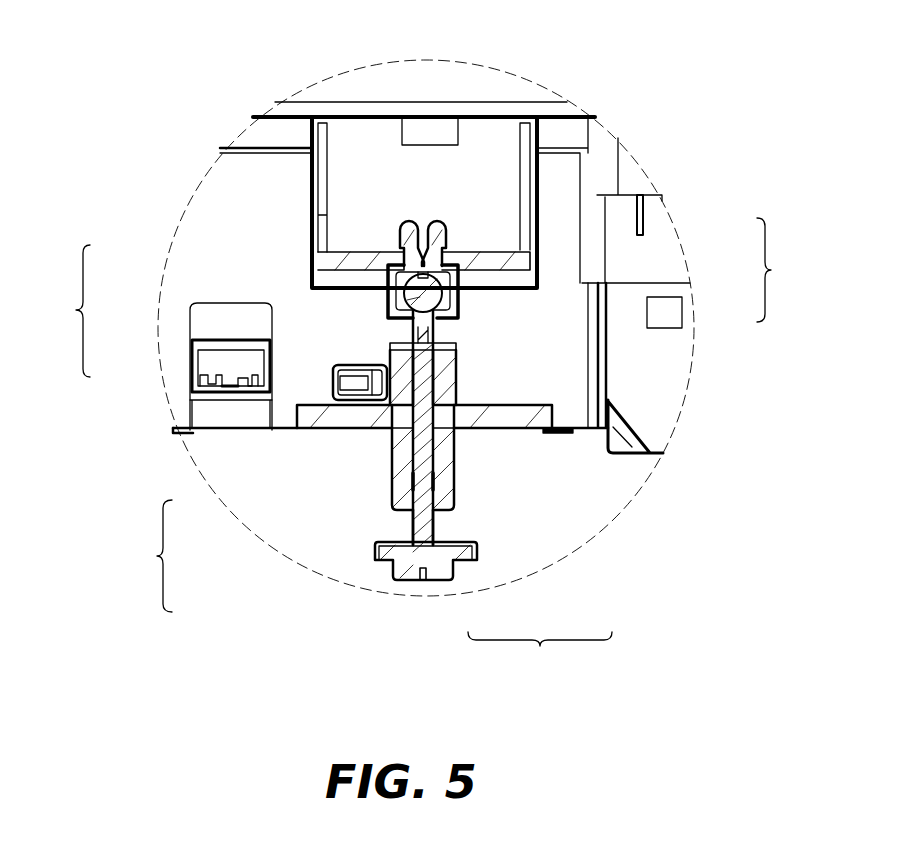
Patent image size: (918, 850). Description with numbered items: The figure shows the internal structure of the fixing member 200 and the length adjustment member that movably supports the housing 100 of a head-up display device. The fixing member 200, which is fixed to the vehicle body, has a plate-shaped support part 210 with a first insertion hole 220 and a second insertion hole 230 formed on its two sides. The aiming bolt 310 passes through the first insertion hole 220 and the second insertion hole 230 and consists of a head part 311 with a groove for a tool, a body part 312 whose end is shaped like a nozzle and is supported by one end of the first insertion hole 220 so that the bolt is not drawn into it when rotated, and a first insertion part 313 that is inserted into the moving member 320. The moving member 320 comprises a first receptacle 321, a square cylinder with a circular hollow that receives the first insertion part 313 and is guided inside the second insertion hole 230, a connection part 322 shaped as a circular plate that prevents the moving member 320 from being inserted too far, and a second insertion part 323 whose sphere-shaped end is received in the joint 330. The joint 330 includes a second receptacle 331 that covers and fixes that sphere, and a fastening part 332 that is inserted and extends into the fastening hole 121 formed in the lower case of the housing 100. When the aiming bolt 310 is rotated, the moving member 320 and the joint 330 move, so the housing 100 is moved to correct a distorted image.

The housing 100 is at (533, 84).
The fastening hole 121 is at (320, 237).
The fixing member 200 is at (540, 653).
The support part 210 is at (523, 421).
The first insertion hole 220 is at (450, 486).
The second insertion hole 230 is at (457, 377).
The aiming bolt 310 is at (142, 556).
The head part 311 is at (388, 558).
The body part 312 is at (408, 513).
The first insertion part 313 is at (415, 457).
The moving member 320 is at (61, 311).
The first receptacle 321 is at (403, 400).
The connection part 322 is at (392, 357).
The second insertion part 323 is at (390, 310).
The joint 330 is at (787, 270).
The second receptacle 331 is at (460, 320).
The fastening part 332 is at (440, 233).